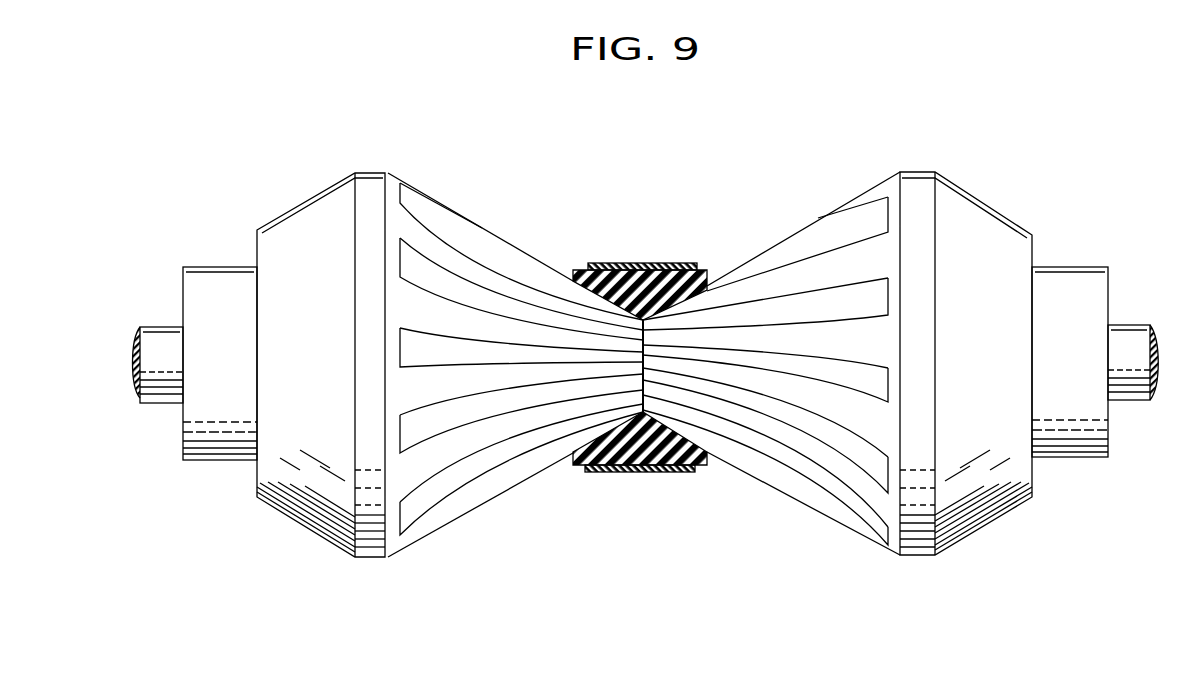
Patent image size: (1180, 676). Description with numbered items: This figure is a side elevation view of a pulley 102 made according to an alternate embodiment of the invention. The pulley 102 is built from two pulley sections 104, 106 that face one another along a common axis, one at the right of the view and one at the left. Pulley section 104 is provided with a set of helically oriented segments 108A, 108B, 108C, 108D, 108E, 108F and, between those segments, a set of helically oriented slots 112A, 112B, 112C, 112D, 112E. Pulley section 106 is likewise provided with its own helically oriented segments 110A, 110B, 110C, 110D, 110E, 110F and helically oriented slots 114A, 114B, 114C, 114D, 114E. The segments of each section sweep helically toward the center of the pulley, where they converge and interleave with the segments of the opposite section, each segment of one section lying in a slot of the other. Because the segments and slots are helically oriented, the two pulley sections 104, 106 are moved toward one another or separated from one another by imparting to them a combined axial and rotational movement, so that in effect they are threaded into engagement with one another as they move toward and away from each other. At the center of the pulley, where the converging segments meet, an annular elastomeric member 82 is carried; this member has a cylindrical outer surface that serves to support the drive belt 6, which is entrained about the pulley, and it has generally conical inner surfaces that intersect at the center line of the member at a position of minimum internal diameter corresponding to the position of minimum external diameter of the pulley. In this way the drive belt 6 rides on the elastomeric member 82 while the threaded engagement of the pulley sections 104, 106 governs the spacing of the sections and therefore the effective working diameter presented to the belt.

The drive belt 6 is at (660, 263).
The annular elastomeric member 82 is at (593, 268).
The pulley 102 is at (631, 329).
The pulley section 104 is at (921, 160).
The pulley section 106 is at (382, 141).
The helically oriented segment 108A is at (877, 185).
The helically oriented segment 108B is at (862, 276).
The helically oriented segment 108C is at (866, 346).
The helically oriented segment 108D is at (866, 421).
The helically oriented segment 108E is at (861, 488).
The helically oriented segment 108F is at (738, 466).
The helically oriented segment 110A is at (505, 243).
The helically oriented segment 110B is at (531, 299).
The helically oriented segment 110C is at (458, 332).
The helically oriented segment 110D is at (461, 404).
The helically oriented segment 110E is at (451, 487).
The helically oriented segment 110F is at (407, 544).
The helically oriented slot 112A is at (883, 232).
The helically oriented slot 112B is at (861, 308).
The helically oriented slot 112C is at (866, 386).
The helically oriented slot 112D is at (869, 458).
The helically oriented slot 112E is at (843, 505).
The helically oriented slot 114A is at (413, 201).
The helically oriented slot 114B is at (441, 281).
The helically oriented slot 114C is at (441, 366).
The helically oriented slot 114D is at (441, 447).
The helically oriented slot 114E is at (441, 530).